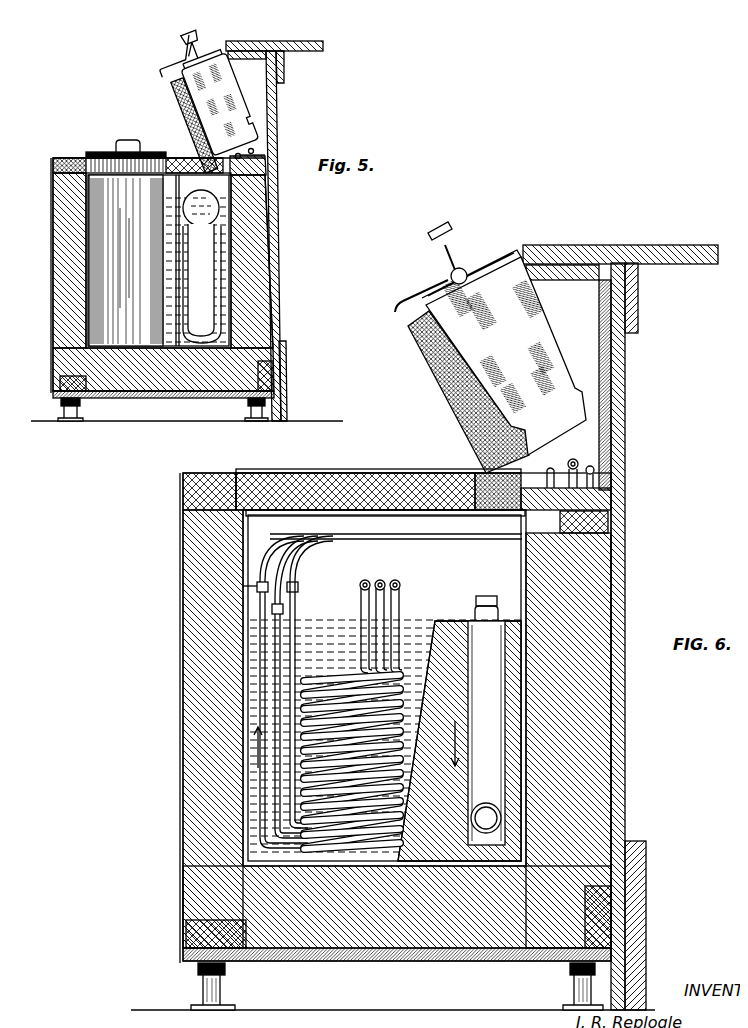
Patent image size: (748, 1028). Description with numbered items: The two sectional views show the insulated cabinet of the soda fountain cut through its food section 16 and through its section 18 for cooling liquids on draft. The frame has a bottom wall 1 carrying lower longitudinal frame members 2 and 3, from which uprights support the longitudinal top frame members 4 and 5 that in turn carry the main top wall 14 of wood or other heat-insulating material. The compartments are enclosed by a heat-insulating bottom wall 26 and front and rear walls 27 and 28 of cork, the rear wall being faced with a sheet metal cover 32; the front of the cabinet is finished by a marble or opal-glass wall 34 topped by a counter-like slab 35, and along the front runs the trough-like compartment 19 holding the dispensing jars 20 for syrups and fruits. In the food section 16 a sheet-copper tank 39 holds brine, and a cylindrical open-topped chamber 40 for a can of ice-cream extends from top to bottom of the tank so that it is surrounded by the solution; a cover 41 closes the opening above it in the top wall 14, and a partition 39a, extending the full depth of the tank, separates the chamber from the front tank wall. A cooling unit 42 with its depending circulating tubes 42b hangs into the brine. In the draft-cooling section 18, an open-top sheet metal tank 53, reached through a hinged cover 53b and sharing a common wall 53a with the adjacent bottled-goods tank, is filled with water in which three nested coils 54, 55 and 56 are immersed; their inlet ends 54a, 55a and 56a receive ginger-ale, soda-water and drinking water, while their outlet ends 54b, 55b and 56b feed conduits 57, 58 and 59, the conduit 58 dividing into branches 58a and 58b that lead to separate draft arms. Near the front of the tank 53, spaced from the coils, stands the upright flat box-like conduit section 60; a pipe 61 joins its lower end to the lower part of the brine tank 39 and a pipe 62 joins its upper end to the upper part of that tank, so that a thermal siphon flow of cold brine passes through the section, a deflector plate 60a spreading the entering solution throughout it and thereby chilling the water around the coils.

In FIG. 5, the bottom wall 1 is at (160, 391).
In FIG. 6, the bottom wall 1 is at (385, 953).
In FIG. 5, the longitudinal frame member 2 is at (267, 370).
In FIG. 6, the longitudinal frame member 2 is at (600, 910).
In FIG. 5, the longitudinal frame member 3 is at (50, 376).
In FIG. 6, the longitudinal frame member 3 is at (178, 932).
In FIG. 5, the longitudinal top frame member 4 is at (262, 170).
In FIG. 6, the longitudinal top frame member 4 is at (600, 512).
In FIG. 5, the longitudinal top frame member 5 is at (48, 157).
In FIG. 6, the longitudinal top frame member 5 is at (178, 483).
In FIG. 5, the main top wall 14 is at (70, 149).
In FIG. 6, the main top wall 14 is at (333, 465).
In FIG. 5, the food section 16 is at (83, 243).
In FIG. 6, the food section 16 is at (352, 762).
In FIG. 6, the section for cooling liquids on draft 18 is at (248, 580).
In FIG. 5, the longitudinal trough-like compartment 19 is at (272, 80).
In FIG. 6, the longitudinal trough-like compartment 19 is at (575, 335).
In FIG. 5, the dispensing jar 20 is at (200, 50).
In FIG. 6, the dispensing jar 20 is at (485, 252).
In FIG. 5, the bottom wall 26 is at (219, 376).
In FIG. 6, the bottom wall 26 is at (460, 917).
In FIG. 5, the front wall 27 is at (260, 273).
In FIG. 6, the front wall 27 is at (595, 663).
In FIG. 5, the rear wall 28 is at (56, 290).
In FIG. 6, the rear wall 28 is at (178, 755).
In FIG. 5, the sheet metal cover 32 is at (50, 318).
In FIG. 6, the sheet metal cover 32 is at (180, 820).
In FIG. 5, the front finishing wall 34 is at (270, 222).
In FIG. 6, the front finishing wall 34 is at (612, 583).
In FIG. 5, the counter-like slab 35 is at (316, 40).
In FIG. 6, the counter-like slab 35 is at (653, 237).
In FIG. 5, the tank 39 is at (80, 195).
In FIG. 5, the partition 39a is at (171, 158).
In FIG. 6, the partition 39a is at (468, 392).
In FIG. 5, the cylindrical open-topped chamber 40 is at (104, 261).
In FIG. 5, the cover 41 is at (93, 143).
In FIG. 5, the heater 42 is at (268, 199).
In FIG. 5, the depending circulating tube 42b is at (215, 250).
In FIG. 6, the open-top sheet metal tank 53 is at (236, 537).
In FIG. 6, the common sheet metal wall 53a is at (305, 508).
In FIG. 6, the hinged cover 53b is at (263, 470).
In FIG. 6, the coil 54 is at (283, 690).
In FIG. 6, the coil end 54a is at (361, 572).
In FIG. 6, the coil end 54b is at (291, 579).
In FIG. 6, the coil 55 is at (268, 660).
In FIG. 6, the coil end 55a is at (376, 572).
In FIG. 6, the coil end 55b is at (277, 600).
In FIG. 6, the coil 56 is at (253, 640).
In FIG. 6, the coil end 56a is at (393, 578).
In FIG. 6, the coil end 56b is at (262, 578).
In FIG. 6, the conduit 57 is at (352, 531).
In FIG. 6, the conduit 58 is at (278, 540).
In FIG. 5, the branch 58a is at (268, 143).
In FIG. 6, the branch 58b is at (570, 452).
In FIG. 5, the conduit 59 is at (247, 142).
In FIG. 6, the conduit 59 is at (260, 541).
In FIG. 6, the cooling fluid conduit section 60 is at (498, 720).
In FIG. 6, the deflector plate 60a is at (497, 775).
In FIG. 6, the pipe 61 is at (493, 810).
In FIG. 6, the pipe 62 is at (489, 582).